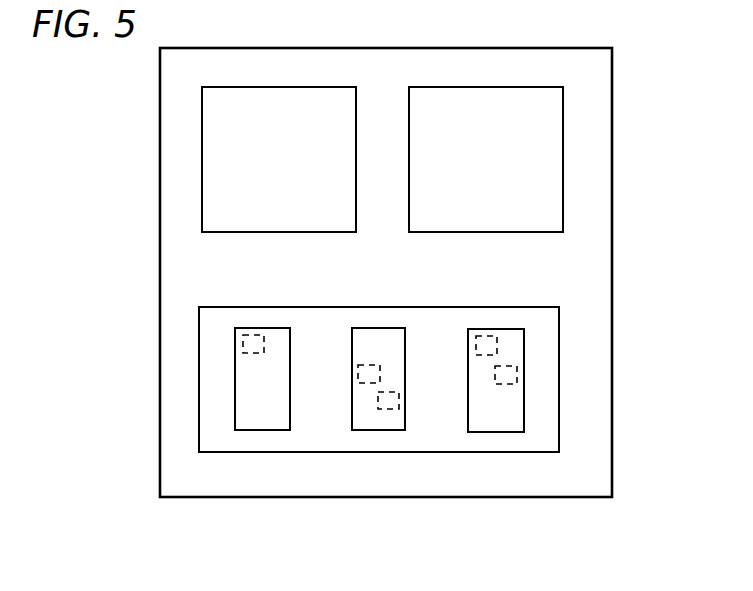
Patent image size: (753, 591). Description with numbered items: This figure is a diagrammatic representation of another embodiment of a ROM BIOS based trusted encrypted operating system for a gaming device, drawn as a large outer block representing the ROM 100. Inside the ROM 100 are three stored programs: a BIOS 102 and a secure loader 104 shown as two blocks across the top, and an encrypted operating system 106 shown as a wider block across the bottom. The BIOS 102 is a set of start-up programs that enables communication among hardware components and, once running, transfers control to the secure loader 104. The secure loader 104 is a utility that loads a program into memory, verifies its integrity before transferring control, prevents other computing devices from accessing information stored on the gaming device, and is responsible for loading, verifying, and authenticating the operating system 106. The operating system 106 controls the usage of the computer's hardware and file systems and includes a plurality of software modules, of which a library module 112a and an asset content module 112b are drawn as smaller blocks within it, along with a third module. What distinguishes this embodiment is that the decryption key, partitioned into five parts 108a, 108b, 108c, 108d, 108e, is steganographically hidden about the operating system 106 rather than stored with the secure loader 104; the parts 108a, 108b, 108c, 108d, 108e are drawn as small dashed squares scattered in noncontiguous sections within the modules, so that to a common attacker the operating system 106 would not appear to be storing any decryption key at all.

The ROM 100 is at (160, 113).
The BIOS 102 is at (281, 87).
The secure loader 104 is at (423, 87).
The operating system 106 is at (524, 410).
The decryption key part 108a is at (358, 378).
The decryption key part 108b is at (243, 352).
The decryption key part 108c is at (517, 370).
The decryption key part 108d is at (399, 405).
The decryption key part 108e is at (497, 341).
The software module 112a is at (235, 378).
The software module 112b is at (378, 430).